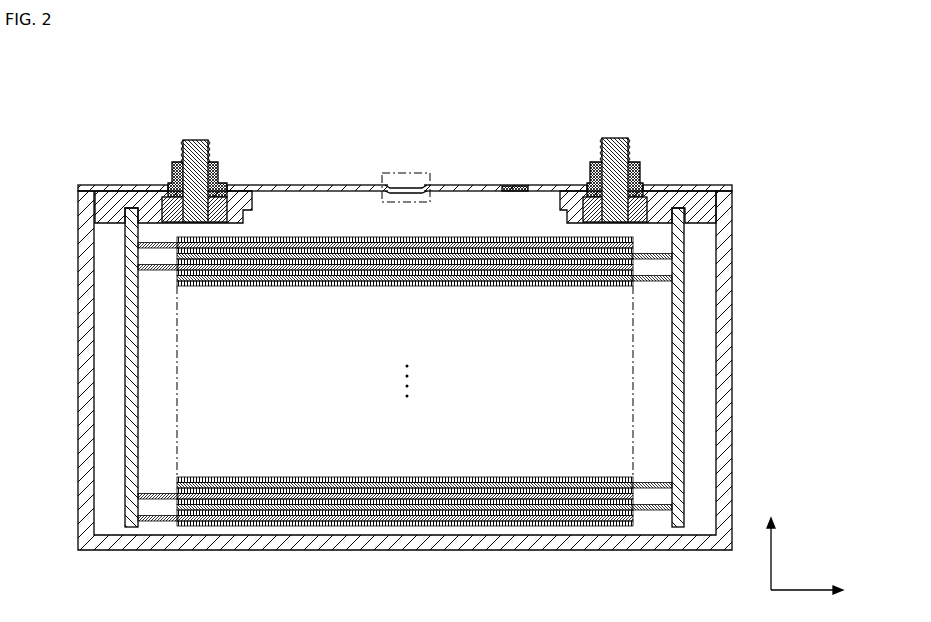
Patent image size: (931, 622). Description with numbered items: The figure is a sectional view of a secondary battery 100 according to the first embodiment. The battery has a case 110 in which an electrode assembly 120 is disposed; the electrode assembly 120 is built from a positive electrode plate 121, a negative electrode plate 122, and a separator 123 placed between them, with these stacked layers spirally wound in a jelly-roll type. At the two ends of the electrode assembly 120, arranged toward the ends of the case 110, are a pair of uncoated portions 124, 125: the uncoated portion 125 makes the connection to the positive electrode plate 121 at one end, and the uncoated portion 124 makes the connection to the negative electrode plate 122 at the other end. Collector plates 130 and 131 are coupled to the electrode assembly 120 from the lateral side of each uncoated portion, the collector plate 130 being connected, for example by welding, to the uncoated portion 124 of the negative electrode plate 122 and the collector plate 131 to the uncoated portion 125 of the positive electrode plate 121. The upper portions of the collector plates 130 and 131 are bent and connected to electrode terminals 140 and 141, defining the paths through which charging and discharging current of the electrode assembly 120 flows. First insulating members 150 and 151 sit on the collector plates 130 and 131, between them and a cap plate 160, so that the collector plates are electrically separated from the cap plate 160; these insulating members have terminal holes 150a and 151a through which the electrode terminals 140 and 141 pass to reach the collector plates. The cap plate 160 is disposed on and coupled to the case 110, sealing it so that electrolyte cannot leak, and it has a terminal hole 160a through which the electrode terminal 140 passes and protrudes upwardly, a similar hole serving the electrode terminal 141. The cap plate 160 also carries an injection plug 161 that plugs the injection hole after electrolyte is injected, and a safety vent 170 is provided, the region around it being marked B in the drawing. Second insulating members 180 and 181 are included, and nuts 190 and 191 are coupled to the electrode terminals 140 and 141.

The secondary battery 100 is at (760, 73).
The case 110 is at (725, 302).
The electrode assembly 120 is at (405, 422).
The positive electrode plate 121 is at (287, 527).
The negative electrode plate 122 is at (560, 527).
The separator 123 is at (418, 528).
The uncoated portion 124 is at (652, 510).
The uncoated portion 125 is at (158, 521).
The collector plate 130 is at (678, 350).
The collector plate 131 is at (130, 348).
The electrode terminal 140 is at (615, 138).
The electrode terminal 141 is at (195, 139).
The first insulating member 150 is at (442, 160).
The terminal hole 150a is at (659, 200).
The first insulating member 151 is at (154, 172).
The terminal hole 151a is at (245, 205).
The cap plate 160 is at (626, 169).
The terminal hole 160a is at (593, 188).
The injection plug 161 is at (513, 186).
The safety vent 170 is at (390, 167).
The second insulating member 180 is at (600, 192).
The second insulating member 181 is at (222, 183).
The nut 190 is at (636, 165).
The nut 191 is at (180, 164).
The vent region B is at (421, 174).